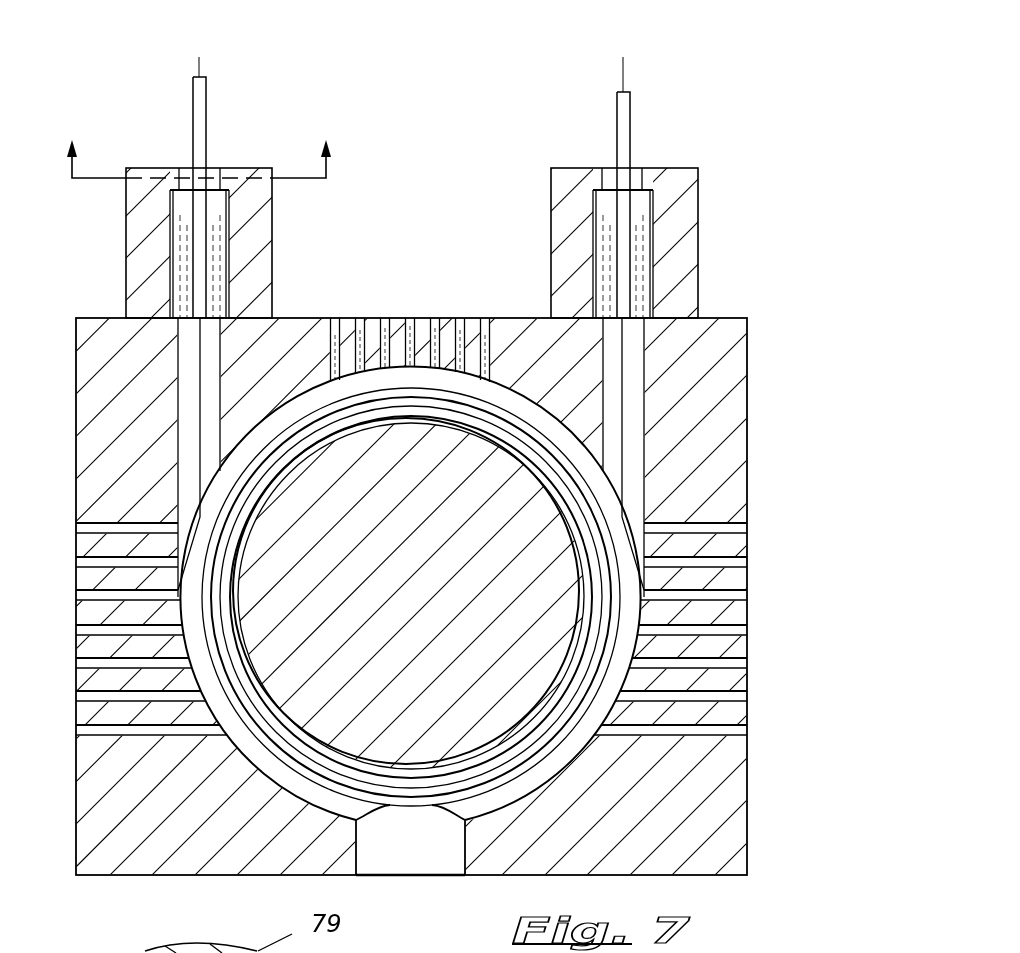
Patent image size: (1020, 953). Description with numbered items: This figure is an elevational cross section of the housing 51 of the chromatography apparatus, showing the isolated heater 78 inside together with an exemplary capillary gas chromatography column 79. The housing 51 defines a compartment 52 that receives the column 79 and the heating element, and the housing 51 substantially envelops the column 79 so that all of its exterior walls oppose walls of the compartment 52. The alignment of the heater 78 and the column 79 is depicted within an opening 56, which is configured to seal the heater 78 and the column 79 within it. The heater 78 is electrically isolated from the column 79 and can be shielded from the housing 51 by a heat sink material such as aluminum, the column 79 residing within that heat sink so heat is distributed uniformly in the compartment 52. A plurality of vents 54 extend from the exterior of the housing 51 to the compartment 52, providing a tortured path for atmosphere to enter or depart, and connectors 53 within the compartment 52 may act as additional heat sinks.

The housing 51 is at (768, 222).
The compartment 52 is at (622, 668).
The connectors 53 is at (668, 168).
The vents 54 is at (747, 593).
The opening 56 is at (612, 177).
The heater 78 is at (632, 104).
The capillary gas chromatography column 79 is at (626, 62).